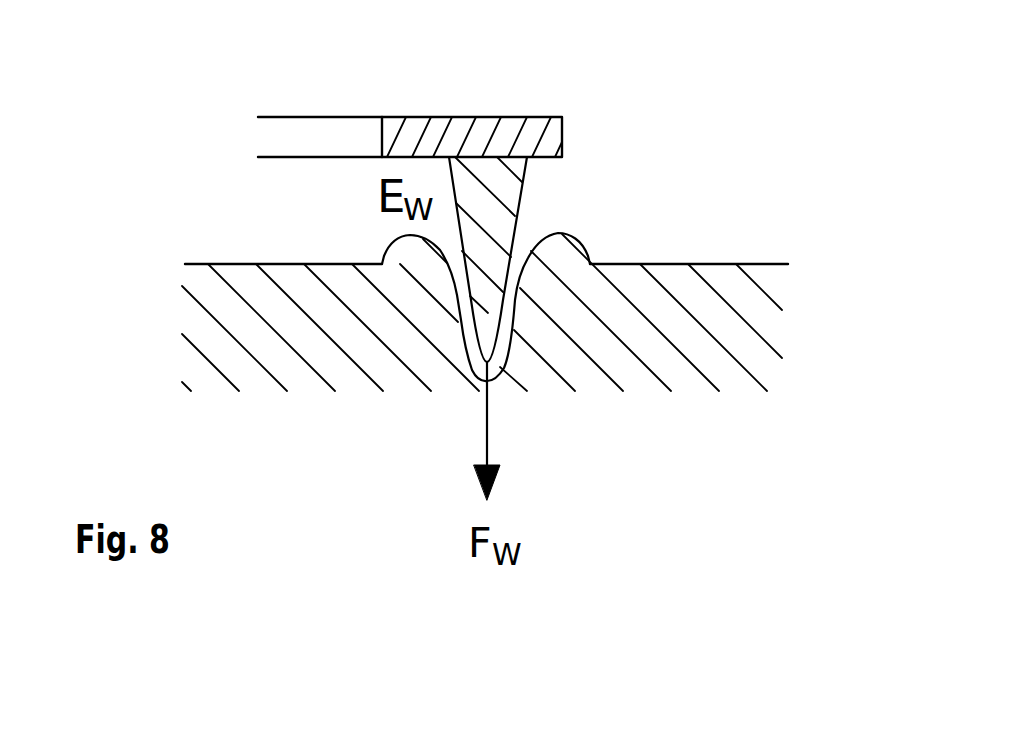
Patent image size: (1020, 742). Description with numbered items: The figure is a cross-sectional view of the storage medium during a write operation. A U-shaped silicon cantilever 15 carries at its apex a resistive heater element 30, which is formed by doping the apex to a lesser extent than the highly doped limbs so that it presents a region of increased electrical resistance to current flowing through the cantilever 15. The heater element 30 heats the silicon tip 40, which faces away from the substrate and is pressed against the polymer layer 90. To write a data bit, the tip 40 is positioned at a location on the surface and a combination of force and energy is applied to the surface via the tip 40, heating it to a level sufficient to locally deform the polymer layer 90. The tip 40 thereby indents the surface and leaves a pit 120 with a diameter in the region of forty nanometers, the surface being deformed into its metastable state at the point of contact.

The cantilever 15 is at (328, 130).
The resistive heater element 30 is at (503, 130).
The silicon tip 40 is at (519, 203).
The polymer layer 90 is at (213, 358).
The pit 120 is at (513, 337).